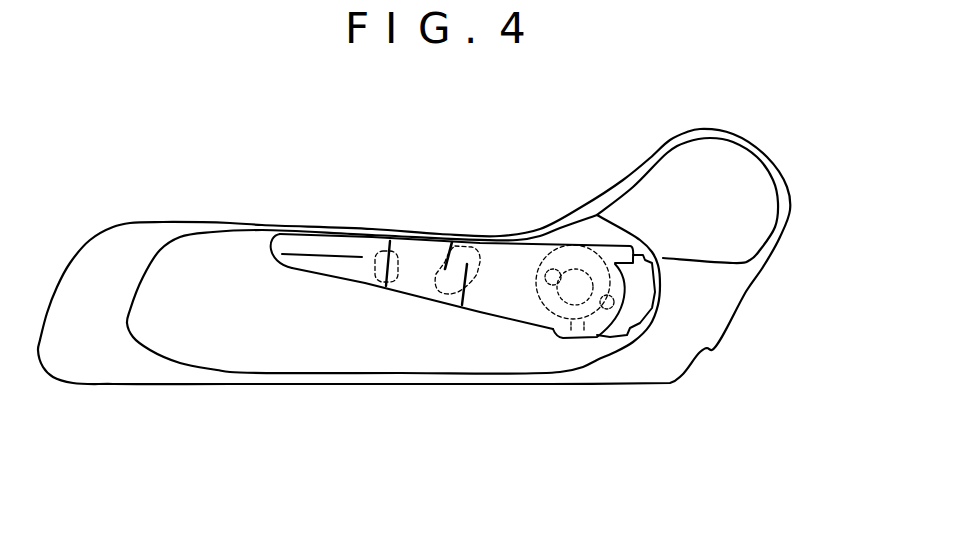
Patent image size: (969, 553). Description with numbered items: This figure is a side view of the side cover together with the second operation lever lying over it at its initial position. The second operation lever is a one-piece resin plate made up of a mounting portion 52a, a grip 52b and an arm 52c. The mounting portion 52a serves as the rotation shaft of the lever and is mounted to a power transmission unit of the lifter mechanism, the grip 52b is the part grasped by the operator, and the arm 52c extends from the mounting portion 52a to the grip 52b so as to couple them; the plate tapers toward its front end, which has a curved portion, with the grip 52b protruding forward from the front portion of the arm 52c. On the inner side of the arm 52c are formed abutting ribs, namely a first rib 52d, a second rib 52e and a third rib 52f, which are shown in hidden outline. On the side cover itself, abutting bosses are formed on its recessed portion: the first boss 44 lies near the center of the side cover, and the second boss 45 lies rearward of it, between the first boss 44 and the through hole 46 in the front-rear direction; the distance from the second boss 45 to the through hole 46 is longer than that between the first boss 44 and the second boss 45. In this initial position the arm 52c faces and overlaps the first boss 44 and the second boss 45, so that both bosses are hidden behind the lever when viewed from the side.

The first boss 44 is at (382, 252).
The second boss 45 is at (463, 267).
The through hole 46 is at (638, 293).
The mounting portion 52a is at (573, 320).
The grip 52b is at (310, 243).
The arm 52c is at (348, 268).
The first rib 52d is at (387, 243).
The second rib 52e is at (455, 240).
The third rib 52f is at (462, 303).